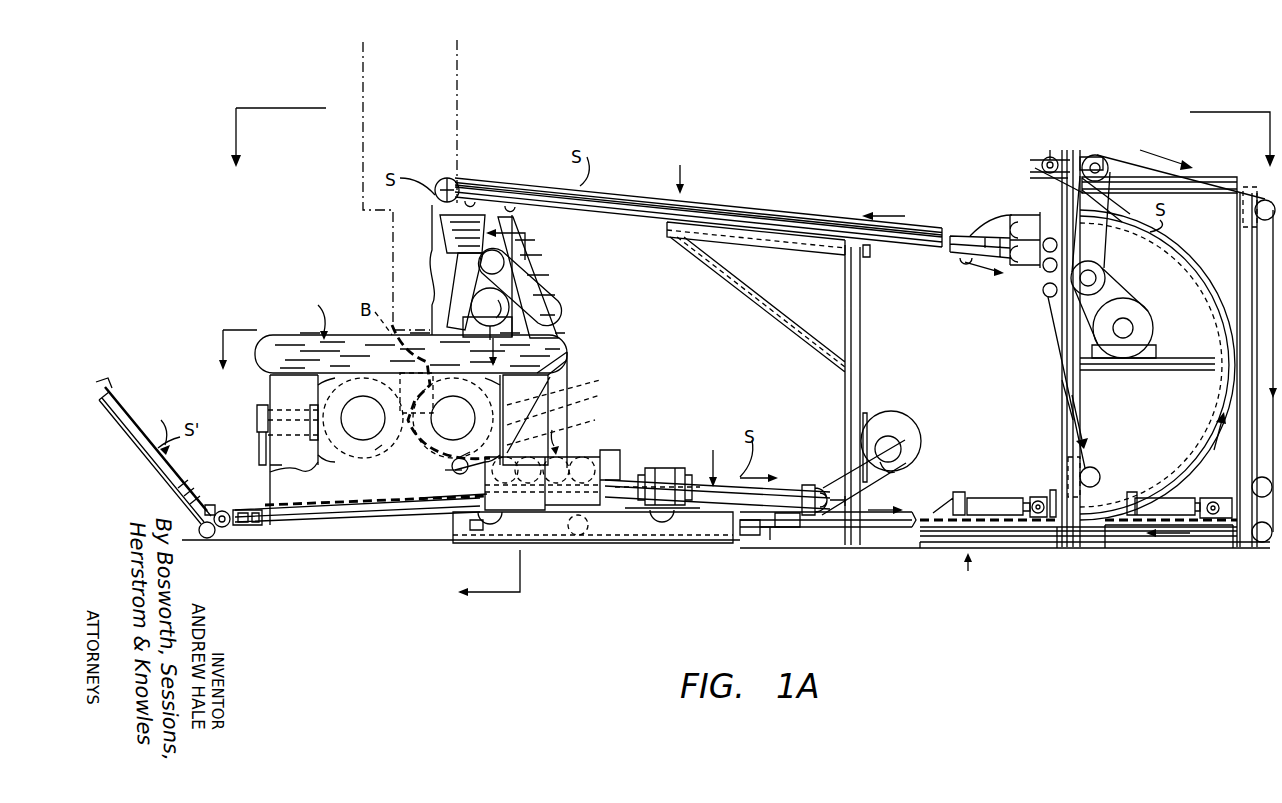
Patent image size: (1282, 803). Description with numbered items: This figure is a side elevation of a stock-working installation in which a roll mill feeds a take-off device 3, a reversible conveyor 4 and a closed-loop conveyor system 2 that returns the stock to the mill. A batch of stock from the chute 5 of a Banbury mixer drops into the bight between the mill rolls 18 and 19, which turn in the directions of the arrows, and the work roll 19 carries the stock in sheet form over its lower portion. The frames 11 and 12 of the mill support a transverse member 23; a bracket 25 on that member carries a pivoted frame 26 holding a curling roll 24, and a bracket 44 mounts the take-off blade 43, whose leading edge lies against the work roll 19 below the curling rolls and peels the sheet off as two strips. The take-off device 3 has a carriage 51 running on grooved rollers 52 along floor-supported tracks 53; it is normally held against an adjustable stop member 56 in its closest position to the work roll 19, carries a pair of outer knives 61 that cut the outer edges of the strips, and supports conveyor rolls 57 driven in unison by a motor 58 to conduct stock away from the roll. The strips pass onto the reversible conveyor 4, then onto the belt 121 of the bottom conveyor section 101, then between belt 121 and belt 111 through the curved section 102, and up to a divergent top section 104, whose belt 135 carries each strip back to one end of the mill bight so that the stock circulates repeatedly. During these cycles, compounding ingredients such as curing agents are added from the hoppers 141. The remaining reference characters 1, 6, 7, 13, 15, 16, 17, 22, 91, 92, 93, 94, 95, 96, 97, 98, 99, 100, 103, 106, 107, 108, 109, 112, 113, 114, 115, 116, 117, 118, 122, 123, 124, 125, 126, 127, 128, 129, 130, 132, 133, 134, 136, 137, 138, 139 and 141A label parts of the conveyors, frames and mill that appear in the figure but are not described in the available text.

The sheet cutting machine 1 is at (315, 315).
The conveyor system 2 is at (752, 156).
The take-off device 3 is at (559, 435).
The reversible conveyor 4 is at (717, 468).
The chute 5 is at (340, 410).
The section line 6 is at (364, 360).
The section line 7 is at (393, 277).
The frame 11 is at (280, 391).
The frame 12 is at (272, 480).
The hopper / strip 13 is at (272, 341).
The feed roll 15 is at (337, 457).
The feed roll 16 is at (428, 460).
The adjusting cylinder 17 is at (257, 421).
The mill roll 18 is at (366, 367).
The work roll 19 is at (462, 380).
The roller 22 is at (490, 290).
The transverse member 23 is at (502, 304).
The curling roll 24 is at (552, 388).
The bracket 25 is at (503, 252).
The pivoted frame 26 is at (548, 314).
The take-off blade 43 is at (572, 409).
The bracket 44 is at (570, 363).
The carriage 51 is at (627, 513).
The grooved roller 52 is at (505, 474).
The track 53 is at (578, 533).
The stop member 56 is at (476, 532).
The conveyor roll 57 is at (530, 476).
The motor 58 is at (667, 466).
The outer knife 61 is at (454, 467).
The rail 91 is at (398, 519).
The bar 92 is at (327, 504).
The bracket 93 is at (824, 486).
The pivot 94 is at (223, 528).
The support 95 is at (787, 514).
The bracket 96 is at (208, 505).
The motor 97 is at (895, 413).
The pulley 98 is at (888, 470).
The belt 99 is at (900, 452).
The support 100 is at (820, 518).
The bottom conveyor section 101 is at (961, 568).
The curved section 102 is at (1213, 269).
The beam 103 is at (636, 150).
The divergent top section 104 is at (843, 221).
The base rail 106 is at (1013, 537).
The rail 107 is at (898, 526).
The curved guide 108 is at (1200, 443).
The cylinder 109 is at (1163, 487).
The belt 111 is at (1050, 316).
The bracket 112 is at (1012, 222).
The bearing block 113 is at (1036, 495).
The roller 114 is at (1043, 292).
The pulley 115 is at (1103, 277).
The belt 116 is at (1118, 293).
The motor 117 is at (1144, 326).
The cylinder 118 is at (992, 497).
The belt 121 is at (768, 541).
The pulley 122 is at (1090, 155).
The roller 123 is at (1255, 208).
The roller 124 is at (1195, 498).
The frame 125 is at (1248, 540).
The support 126 is at (742, 533).
The guide 127 is at (1105, 215).
The bracket 128 is at (1042, 163).
The roller 129 is at (1046, 157).
The bracket 130 is at (1082, 162).
The end cap 132 is at (447, 178).
The roller 133 is at (1043, 266).
The rail 134 is at (546, 188).
The belt 135 is at (470, 200).
The bracket 136 is at (1042, 220).
The post 137 is at (862, 297).
The guide 138 is at (1062, 385).
The cross member 139 is at (1150, 370).
The hopper 141 is at (455, 240).
The feed conveyor 141A is at (108, 385).